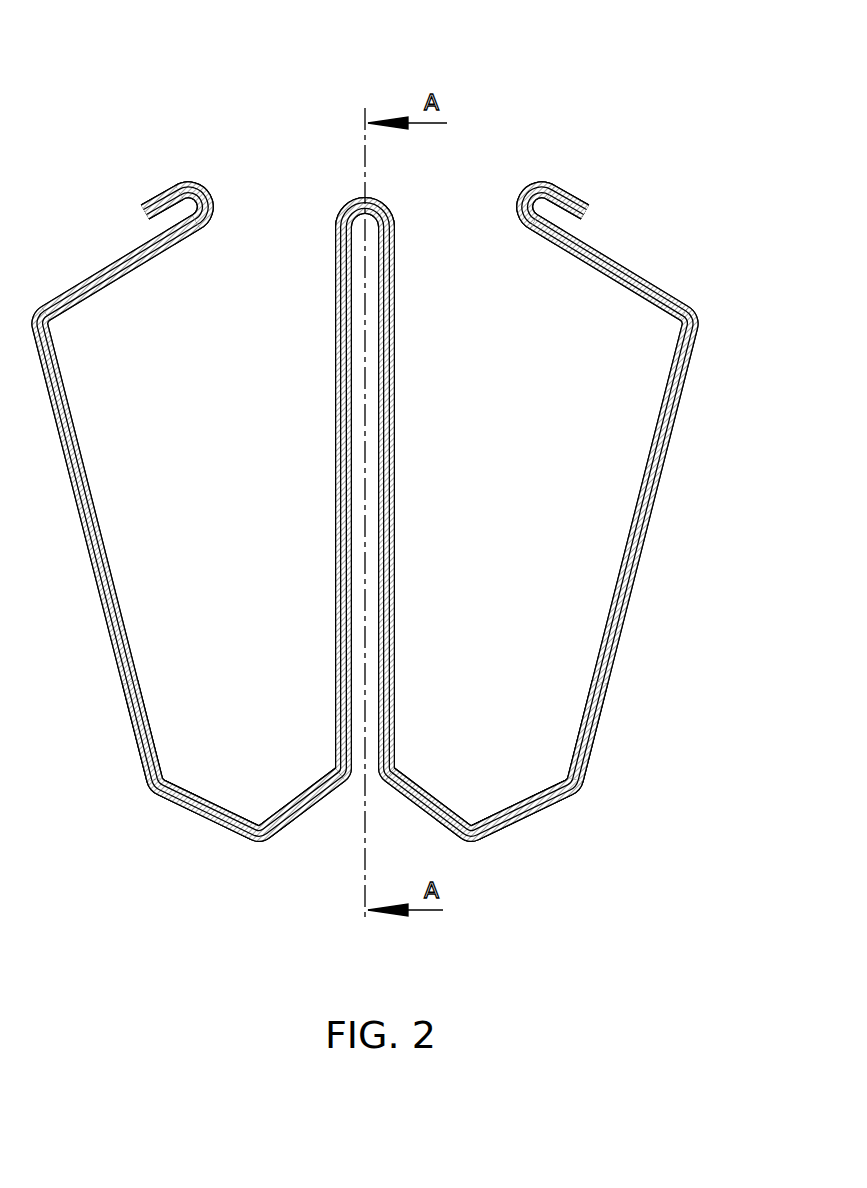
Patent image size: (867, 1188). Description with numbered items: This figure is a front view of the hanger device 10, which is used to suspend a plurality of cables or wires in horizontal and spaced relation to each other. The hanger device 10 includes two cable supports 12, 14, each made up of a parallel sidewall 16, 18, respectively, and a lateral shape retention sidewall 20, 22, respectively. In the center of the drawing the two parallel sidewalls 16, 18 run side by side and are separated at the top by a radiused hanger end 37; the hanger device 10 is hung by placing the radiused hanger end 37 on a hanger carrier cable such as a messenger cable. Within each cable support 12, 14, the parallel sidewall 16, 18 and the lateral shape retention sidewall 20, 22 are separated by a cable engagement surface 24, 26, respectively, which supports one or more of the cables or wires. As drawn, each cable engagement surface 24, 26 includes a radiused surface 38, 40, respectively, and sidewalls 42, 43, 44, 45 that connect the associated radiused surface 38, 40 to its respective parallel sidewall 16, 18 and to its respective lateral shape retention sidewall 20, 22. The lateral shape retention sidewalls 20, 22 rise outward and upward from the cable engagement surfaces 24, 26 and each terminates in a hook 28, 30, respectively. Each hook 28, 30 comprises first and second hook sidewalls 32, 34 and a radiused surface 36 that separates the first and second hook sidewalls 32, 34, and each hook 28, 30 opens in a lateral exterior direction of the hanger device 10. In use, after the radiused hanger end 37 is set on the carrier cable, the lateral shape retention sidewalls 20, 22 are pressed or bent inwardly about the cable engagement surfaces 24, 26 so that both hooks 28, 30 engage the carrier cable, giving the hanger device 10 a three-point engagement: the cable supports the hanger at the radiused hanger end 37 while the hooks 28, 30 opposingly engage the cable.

The hanger device 10 is at (437, 430).
The cable support 12 is at (248, 861).
The cable support 14 is at (483, 853).
The parallel sidewall 16 is at (333, 523).
The parallel sidewall 18 is at (396, 452).
The lateral shape retention sidewall 20 is at (90, 468).
The lateral shape retention sidewall 22 is at (612, 575).
The cable engagement surface 24 is at (270, 820).
The cable engagement surface 26 is at (492, 818).
The hook 28 is at (206, 178).
The hook 30 is at (552, 175).
The first hook sidewall 32 is at (95, 278).
The second hook sidewall 34 is at (152, 200).
The radiused surface 36 is at (214, 208).
The radiused hanger end 37 is at (384, 206).
The radiused surface 38 is at (252, 822).
The radiused surface 40 is at (466, 825).
The sidewall 42 is at (203, 800).
The sidewall 43 is at (298, 800).
The sidewall 44 is at (422, 792).
The sidewall 45 is at (520, 805).